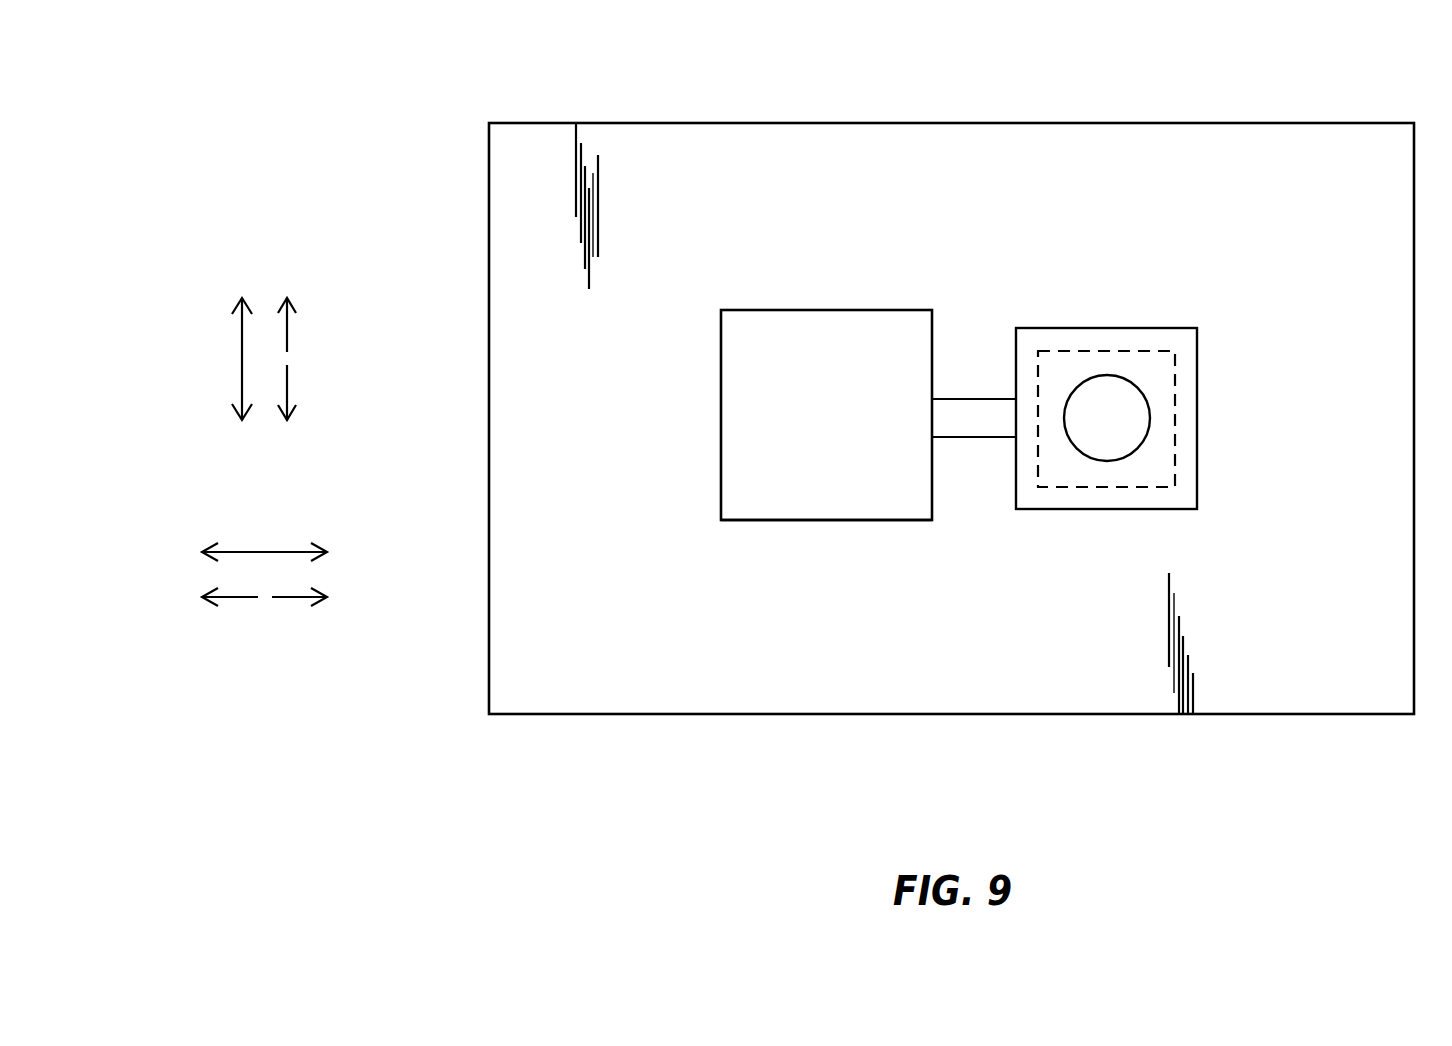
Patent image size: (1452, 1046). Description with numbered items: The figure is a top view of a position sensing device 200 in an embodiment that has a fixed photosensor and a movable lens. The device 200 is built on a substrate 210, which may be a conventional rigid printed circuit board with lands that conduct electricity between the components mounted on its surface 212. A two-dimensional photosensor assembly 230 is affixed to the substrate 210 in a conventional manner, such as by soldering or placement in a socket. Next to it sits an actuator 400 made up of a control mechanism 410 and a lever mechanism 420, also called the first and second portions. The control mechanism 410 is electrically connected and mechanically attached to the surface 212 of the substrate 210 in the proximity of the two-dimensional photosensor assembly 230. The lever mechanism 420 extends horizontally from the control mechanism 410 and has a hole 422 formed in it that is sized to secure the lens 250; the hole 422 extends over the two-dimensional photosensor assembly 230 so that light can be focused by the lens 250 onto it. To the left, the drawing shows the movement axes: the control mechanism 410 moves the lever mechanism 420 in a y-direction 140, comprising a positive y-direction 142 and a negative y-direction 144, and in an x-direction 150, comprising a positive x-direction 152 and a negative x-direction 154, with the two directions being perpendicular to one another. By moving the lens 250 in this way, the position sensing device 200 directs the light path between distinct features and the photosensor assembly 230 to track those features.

The position sensing device 200 is at (380, 76).
The substrate 210 is at (1186, 123).
The surface 212 is at (907, 199).
The y-direction 140 is at (242, 358).
The positive y-direction 142 is at (287, 340).
The negative y-direction 144 is at (287, 378).
The x-direction 150 is at (262, 550).
The positive x-direction 152 is at (285, 600).
The negative x-direction 154 is at (243, 600).
The actuator 400 is at (712, 411).
The control mechanism 410 is at (826, 521).
The lever mechanism 420 is at (1208, 474).
The two-dimensional photosensor assembly 230 is at (1186, 366).
The hole 422 is at (1150, 418).
The lens 250 is at (1110, 395).